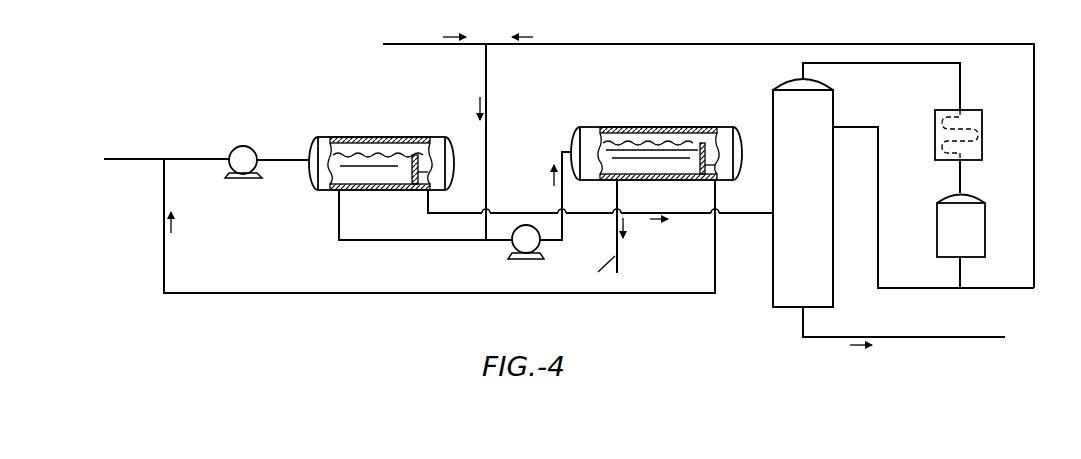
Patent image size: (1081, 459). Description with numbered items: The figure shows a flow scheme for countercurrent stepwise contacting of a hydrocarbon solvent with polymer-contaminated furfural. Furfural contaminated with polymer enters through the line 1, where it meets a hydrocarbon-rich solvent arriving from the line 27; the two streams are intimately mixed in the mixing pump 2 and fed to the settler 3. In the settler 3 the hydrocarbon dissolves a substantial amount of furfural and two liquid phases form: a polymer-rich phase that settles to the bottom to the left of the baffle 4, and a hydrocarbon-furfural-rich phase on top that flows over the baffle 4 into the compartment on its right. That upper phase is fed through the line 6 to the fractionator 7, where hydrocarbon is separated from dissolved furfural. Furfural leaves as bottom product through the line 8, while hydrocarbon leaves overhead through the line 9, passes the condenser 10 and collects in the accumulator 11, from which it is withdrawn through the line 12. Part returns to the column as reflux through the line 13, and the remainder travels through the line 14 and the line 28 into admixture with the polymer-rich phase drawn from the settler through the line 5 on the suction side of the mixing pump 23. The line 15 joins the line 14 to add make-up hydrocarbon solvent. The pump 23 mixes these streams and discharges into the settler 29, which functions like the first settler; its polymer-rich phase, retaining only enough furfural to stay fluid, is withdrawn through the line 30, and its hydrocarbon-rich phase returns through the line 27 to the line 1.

The line 1 is at (133, 162).
The mixing pump 2 is at (236, 149).
The settler 3 is at (331, 137).
The baffle 4 is at (415, 155).
The line 5 is at (428, 241).
The line 6 is at (588, 207).
The fractionator 7 is at (833, 264).
The line 8 is at (950, 340).
The line 9 is at (942, 65).
The condenser 10 is at (982, 153).
The accumulator 11 is at (985, 229).
The line 12 is at (958, 268).
The line 13 is at (881, 237).
The line 14 is at (582, 45).
The line 15 is at (420, 45).
The mixing pump 23 is at (512, 243).
The line 27 is at (568, 297).
The line 28 is at (488, 170).
The settler 29 is at (650, 127).
The line 30 is at (620, 259).